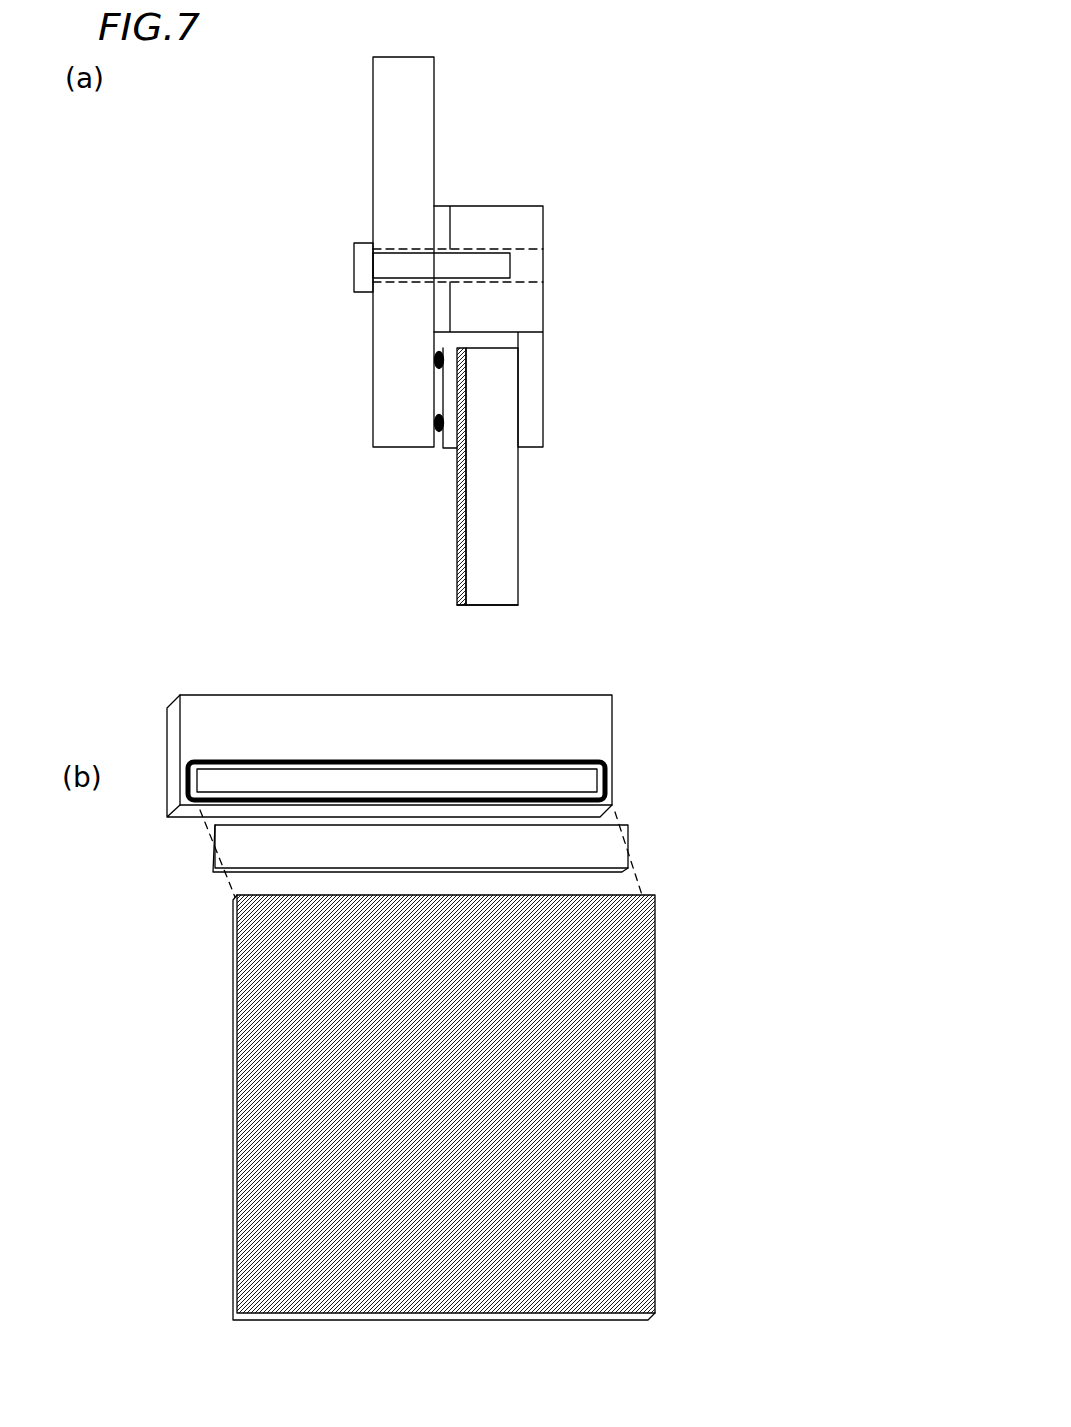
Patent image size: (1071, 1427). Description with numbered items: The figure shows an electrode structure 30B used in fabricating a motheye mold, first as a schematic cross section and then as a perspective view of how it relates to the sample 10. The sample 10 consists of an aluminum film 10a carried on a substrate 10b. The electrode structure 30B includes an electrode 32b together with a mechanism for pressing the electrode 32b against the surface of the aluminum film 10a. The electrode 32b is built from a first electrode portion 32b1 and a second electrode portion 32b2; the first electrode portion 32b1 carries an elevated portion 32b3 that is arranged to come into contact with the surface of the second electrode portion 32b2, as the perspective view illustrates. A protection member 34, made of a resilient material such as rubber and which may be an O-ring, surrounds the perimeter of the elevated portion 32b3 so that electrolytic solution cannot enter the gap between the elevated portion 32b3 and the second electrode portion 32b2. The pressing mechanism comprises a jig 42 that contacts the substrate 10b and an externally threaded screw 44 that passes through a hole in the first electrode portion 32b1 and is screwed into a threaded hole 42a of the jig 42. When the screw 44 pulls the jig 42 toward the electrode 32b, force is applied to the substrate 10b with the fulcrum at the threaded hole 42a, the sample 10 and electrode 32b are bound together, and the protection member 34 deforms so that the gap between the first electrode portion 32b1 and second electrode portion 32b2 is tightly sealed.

The electrode structure 30B is at (580, 116).
The jig 42 is at (543, 221).
The threaded hole 42a is at (580, 268).
The externally threaded screw 44 is at (362, 272).
The protection member 34 is at (435, 363).
The electrode 32b is at (253, 393).
The first electrode portion 32b1 is at (400, 430).
The second electrode portion 32b2 is at (446, 447).
The elevated portion 32b3 is at (437, 393).
The sample 10 is at (518, 612).
The aluminum film 10a is at (455, 530).
The substrate 10b is at (505, 553).